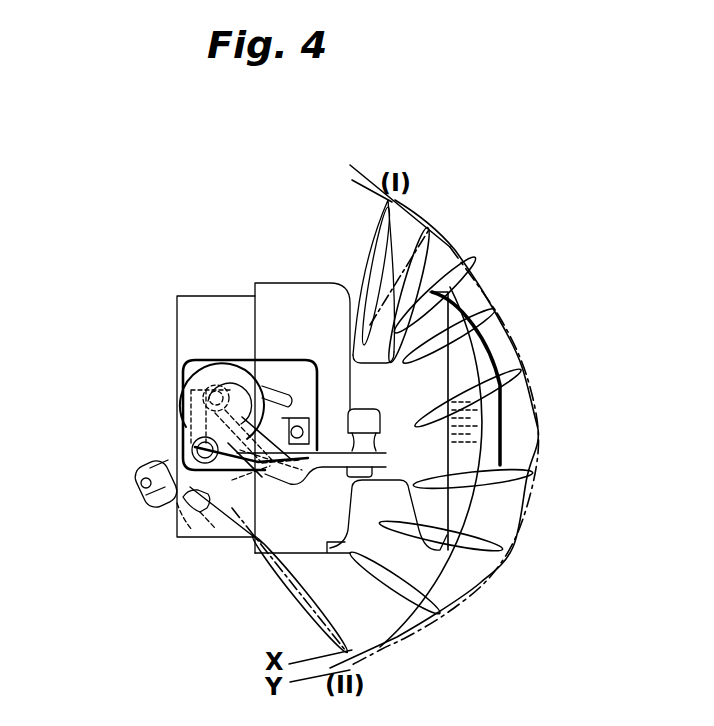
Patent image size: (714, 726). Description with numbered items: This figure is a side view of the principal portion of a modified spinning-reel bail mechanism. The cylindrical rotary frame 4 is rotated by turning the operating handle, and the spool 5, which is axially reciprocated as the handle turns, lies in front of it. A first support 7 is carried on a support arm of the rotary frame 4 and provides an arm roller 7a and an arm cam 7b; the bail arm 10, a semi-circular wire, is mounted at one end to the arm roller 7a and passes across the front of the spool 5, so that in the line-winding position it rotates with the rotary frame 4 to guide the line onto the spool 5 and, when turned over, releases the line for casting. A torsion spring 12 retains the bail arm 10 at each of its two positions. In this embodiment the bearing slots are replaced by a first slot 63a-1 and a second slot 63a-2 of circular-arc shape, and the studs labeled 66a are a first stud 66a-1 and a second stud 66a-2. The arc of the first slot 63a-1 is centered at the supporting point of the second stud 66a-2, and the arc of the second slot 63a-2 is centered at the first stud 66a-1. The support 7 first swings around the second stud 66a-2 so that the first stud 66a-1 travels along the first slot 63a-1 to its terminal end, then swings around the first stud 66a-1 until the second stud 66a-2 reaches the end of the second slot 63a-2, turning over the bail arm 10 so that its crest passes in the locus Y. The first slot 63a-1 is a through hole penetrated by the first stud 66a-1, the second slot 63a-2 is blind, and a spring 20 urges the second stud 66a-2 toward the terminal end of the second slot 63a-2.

The rotary frame 4 is at (187, 296).
The spool 5 is at (294, 288).
The first support 7 is at (218, 363).
The arm roller 7a is at (376, 438).
The arm cam 7b is at (300, 482).
The bail arm 10 is at (362, 262).
The torsion spring 12 is at (175, 445).
The spring 20 is at (218, 478).
The first slot 63a-1 is at (258, 388).
The second slot 63a-2 is at (178, 421).
The cam 66a is at (213, 357).
The first stud 66a-1 is at (180, 394).
The second stud 66a-2 is at (248, 474).